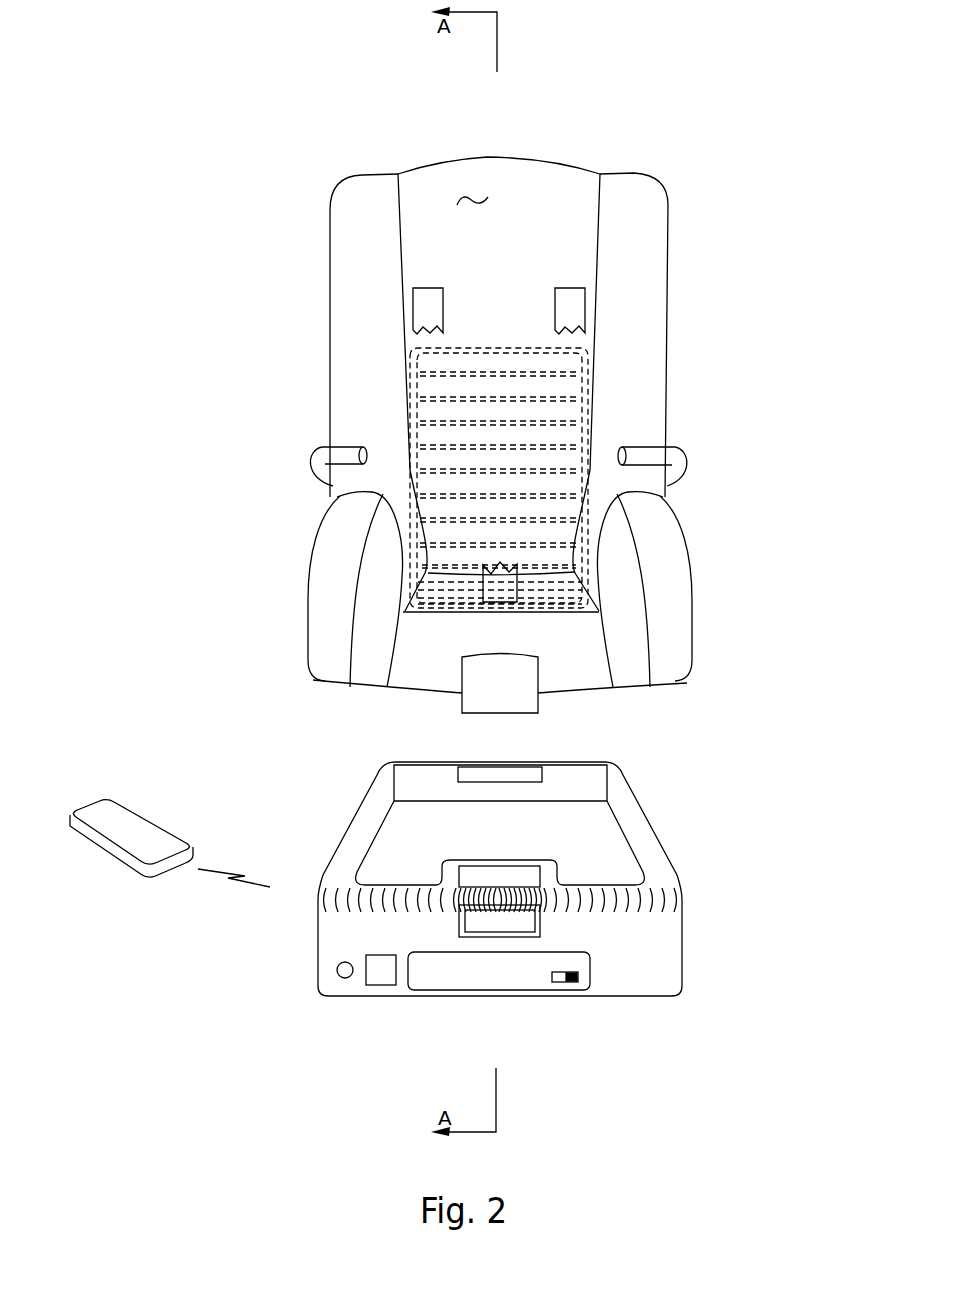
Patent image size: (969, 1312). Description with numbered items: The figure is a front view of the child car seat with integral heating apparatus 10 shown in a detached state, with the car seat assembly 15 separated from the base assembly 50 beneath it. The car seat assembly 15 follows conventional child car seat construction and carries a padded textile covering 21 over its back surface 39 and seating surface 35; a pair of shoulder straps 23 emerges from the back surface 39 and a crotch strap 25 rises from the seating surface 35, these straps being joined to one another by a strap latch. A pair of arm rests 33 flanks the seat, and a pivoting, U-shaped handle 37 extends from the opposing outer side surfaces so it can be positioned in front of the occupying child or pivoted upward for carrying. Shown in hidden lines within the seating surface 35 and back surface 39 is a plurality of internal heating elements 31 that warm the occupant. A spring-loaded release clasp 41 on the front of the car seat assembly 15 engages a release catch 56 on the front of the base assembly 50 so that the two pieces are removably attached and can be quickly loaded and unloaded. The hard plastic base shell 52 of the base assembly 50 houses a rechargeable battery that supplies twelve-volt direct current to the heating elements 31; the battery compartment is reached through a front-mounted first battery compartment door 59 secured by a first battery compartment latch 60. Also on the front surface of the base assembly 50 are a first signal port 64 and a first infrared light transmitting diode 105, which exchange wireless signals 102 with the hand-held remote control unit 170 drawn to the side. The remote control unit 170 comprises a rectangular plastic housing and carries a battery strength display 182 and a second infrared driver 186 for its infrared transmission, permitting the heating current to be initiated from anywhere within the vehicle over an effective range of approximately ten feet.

The child car seat with integral heating apparatus 10 is at (134, 121).
The car seat assembly 15 is at (546, 132).
The padded textile covering 21 is at (360, 210).
The shoulder strap 23 is at (570, 308).
The crotch strap 25 is at (492, 587).
The heating element 31 is at (427, 458).
The arm rest 33 is at (330, 527).
The seating surface 35 is at (577, 583).
The handle 37 is at (322, 452).
The back surface 39 is at (467, 197).
The release clasp 41 is at (480, 703).
The base assembly 50 is at (314, 1014).
The base shell 52 is at (681, 942).
The release catch 56 is at (458, 928).
The first battery compartment door 59 is at (497, 977).
The first battery compartment latch 60 is at (573, 978).
The first signal port 64 is at (383, 980).
The wireless signal 102 is at (238, 873).
The first infrared light transmitting diode 105 is at (338, 973).
The remote control unit 170 is at (115, 838).
The battery strength display 182 is at (520, 770).
The second infrared driver 186 is at (540, 876).